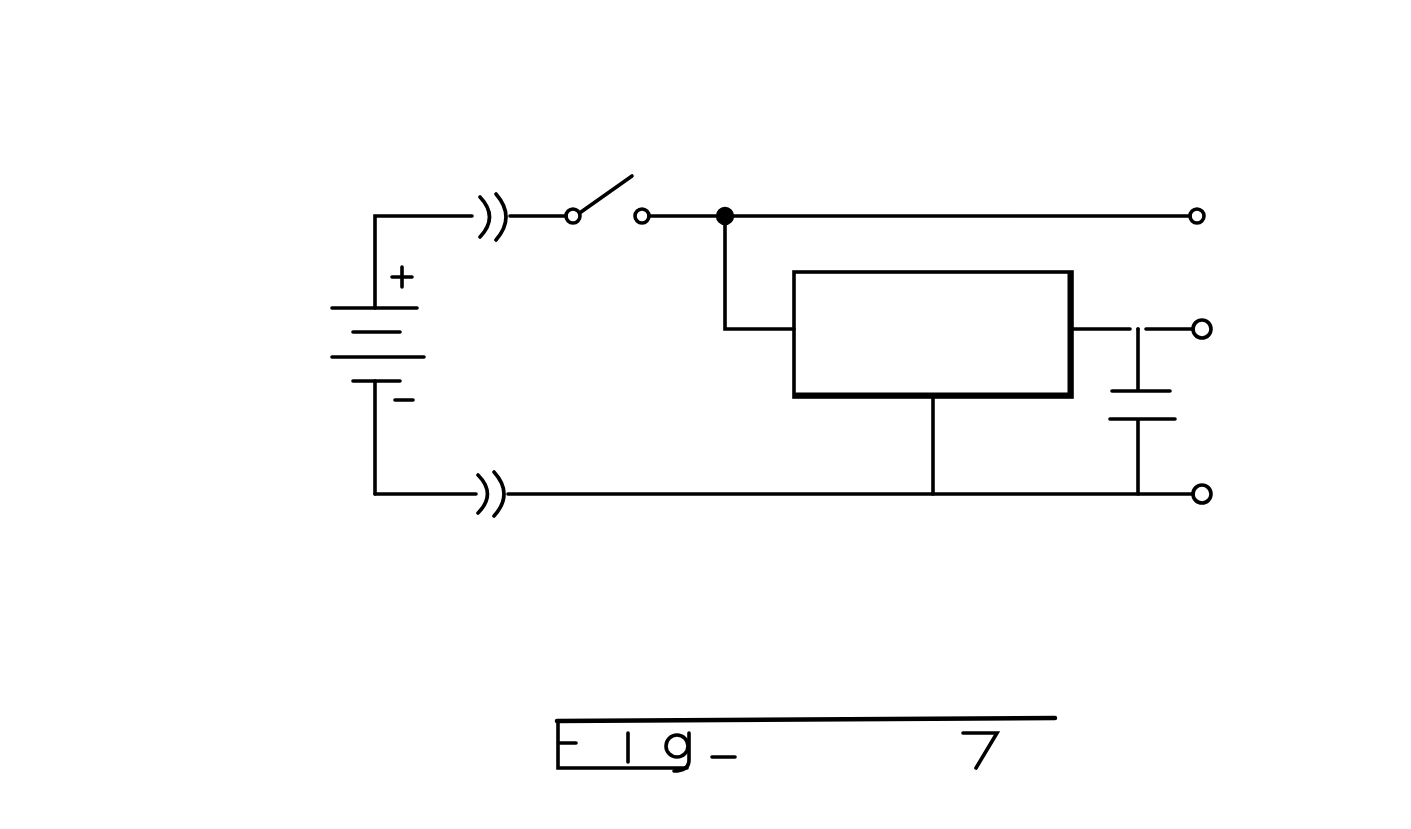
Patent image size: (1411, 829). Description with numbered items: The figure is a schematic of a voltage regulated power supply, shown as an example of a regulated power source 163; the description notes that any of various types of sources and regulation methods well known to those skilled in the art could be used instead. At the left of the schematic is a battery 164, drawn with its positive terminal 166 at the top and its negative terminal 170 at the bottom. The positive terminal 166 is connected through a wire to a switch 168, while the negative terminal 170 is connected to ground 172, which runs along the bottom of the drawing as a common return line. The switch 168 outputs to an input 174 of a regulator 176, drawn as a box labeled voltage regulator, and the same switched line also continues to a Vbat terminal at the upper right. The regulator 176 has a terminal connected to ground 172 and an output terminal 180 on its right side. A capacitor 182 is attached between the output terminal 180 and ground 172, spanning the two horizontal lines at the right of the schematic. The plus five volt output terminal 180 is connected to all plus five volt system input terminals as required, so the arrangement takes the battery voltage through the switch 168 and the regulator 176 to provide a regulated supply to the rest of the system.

The regulated power source 163 is at (1010, 135).
The battery 164 is at (323, 352).
The positive terminal 166 is at (373, 252).
The switch 168 is at (603, 192).
The negative terminal 170 is at (370, 417).
The ground 172 is at (772, 496).
The input 174 is at (763, 331).
The regulator 176 is at (915, 272).
The output terminal 180 is at (1212, 322).
The capacitor 182 is at (1167, 407).